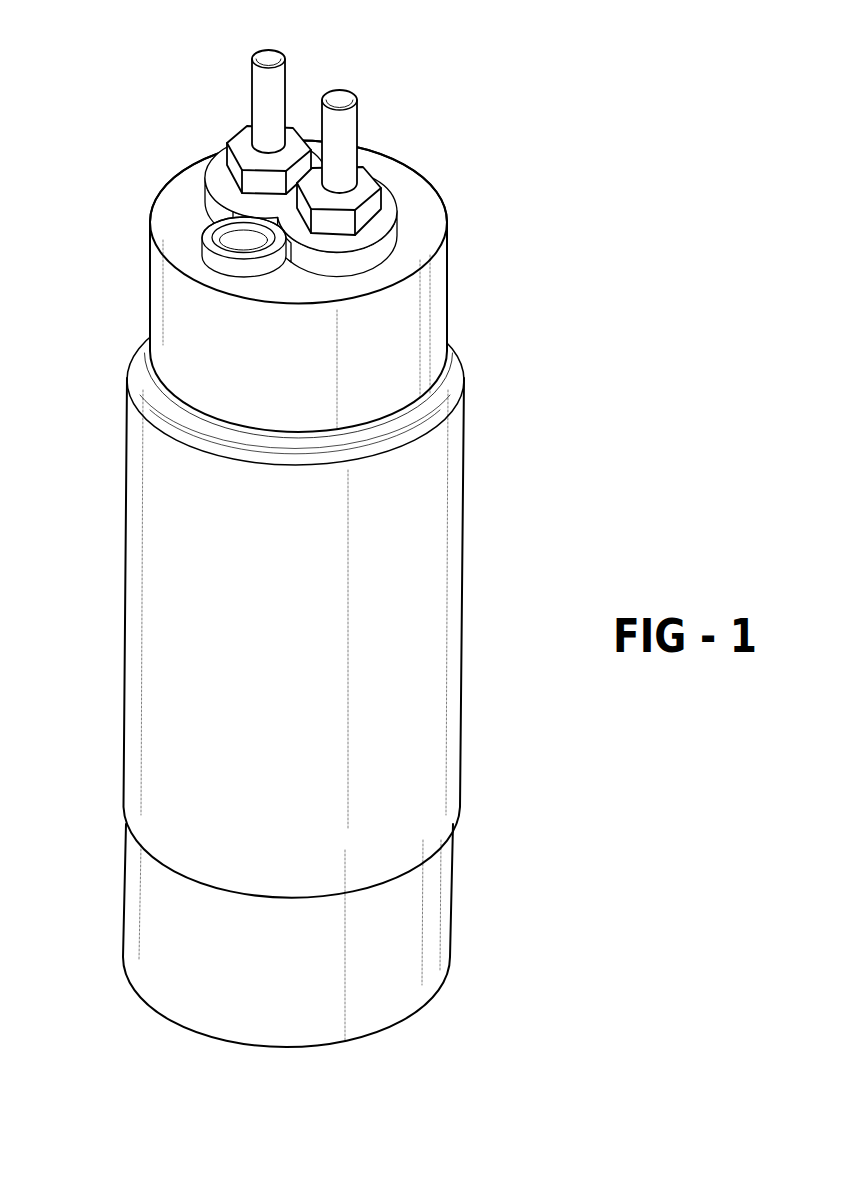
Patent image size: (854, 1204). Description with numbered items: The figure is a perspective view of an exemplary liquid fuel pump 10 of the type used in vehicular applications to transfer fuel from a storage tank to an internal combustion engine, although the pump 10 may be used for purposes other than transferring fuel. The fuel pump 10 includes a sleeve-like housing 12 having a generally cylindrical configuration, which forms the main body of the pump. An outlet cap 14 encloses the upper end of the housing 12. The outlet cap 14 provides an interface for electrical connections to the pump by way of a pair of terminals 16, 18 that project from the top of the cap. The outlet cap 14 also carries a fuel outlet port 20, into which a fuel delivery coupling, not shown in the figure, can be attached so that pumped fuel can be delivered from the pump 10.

The liquid fuel pump 10 is at (507, 300).
The sleeve-like housing 12 is at (143, 682).
The outlet cap 14 is at (157, 305).
The terminal 16 is at (272, 55).
The terminal 18 is at (338, 138).
The fuel outlet port 20 is at (232, 248).